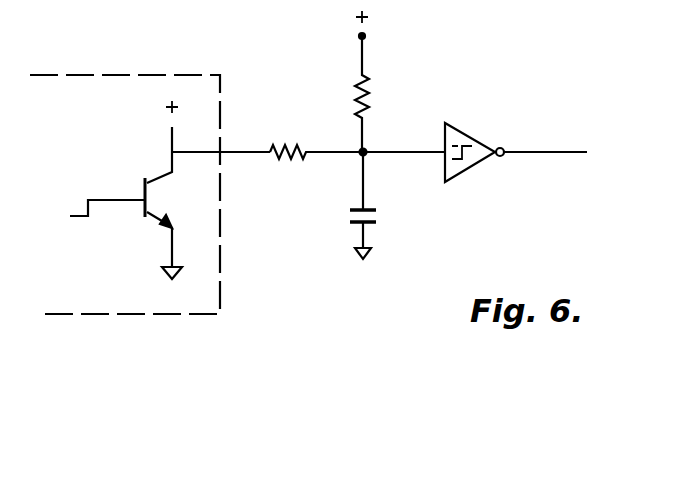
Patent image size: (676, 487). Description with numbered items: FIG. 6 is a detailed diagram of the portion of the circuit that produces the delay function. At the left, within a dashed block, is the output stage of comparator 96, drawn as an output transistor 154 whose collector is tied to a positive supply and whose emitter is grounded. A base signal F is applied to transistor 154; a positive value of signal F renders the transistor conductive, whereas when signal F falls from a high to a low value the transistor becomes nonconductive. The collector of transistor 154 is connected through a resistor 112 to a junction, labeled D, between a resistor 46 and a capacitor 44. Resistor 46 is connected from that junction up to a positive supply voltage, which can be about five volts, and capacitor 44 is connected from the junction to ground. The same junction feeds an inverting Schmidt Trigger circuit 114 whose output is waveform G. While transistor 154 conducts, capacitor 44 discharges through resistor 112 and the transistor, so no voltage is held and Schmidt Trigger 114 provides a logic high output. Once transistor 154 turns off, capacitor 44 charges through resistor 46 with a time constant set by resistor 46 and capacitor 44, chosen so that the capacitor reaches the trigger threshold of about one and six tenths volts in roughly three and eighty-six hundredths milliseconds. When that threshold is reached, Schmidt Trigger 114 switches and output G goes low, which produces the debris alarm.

The comparator 96 is at (220, 92).
The output transistor 154 is at (148, 166).
The signal F is at (113, 196).
The resistor 112 is at (285, 160).
The node D is at (325, 142).
The resistor 46 is at (370, 93).
The capacitor 44 is at (376, 210).
The Schmidt Trigger circuit 114 is at (470, 134).
The waveform G is at (575, 150).